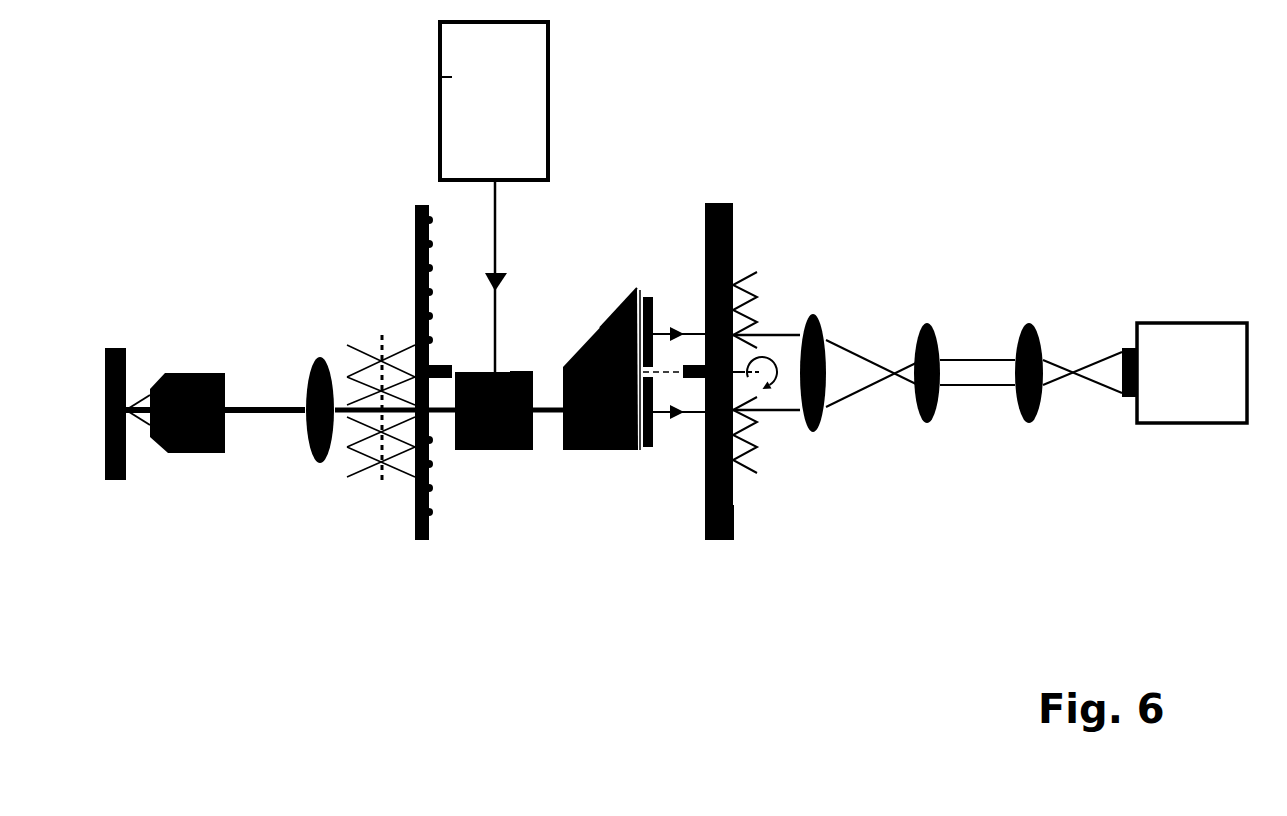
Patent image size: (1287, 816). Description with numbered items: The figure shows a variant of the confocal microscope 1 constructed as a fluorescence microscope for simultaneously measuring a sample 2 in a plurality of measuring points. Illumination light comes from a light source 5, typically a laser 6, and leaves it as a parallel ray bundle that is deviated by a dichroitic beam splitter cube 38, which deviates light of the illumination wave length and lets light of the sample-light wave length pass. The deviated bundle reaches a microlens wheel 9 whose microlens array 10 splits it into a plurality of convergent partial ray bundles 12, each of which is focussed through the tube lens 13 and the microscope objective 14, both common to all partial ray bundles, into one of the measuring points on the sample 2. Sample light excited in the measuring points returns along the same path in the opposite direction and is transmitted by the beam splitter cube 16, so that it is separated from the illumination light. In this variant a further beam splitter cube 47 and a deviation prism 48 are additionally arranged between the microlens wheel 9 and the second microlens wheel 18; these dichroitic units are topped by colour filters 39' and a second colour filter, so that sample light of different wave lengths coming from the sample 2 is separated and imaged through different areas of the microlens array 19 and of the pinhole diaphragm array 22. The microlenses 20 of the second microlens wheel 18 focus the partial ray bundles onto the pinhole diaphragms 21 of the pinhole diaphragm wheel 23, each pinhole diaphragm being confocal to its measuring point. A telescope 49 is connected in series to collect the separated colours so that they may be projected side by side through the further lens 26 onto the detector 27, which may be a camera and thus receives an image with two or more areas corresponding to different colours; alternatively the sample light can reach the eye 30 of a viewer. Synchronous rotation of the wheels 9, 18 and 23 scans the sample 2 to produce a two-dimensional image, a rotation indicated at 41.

The confocal microscope 1 is at (872, 120).
The sample 2 is at (112, 480).
The light source 5 is at (548, 77).
The laser 6 is at (452, 77).
The microlens wheel 9 is at (421, 540).
The microlens array 10 is at (398, 517).
The convergent partial ray bundles 12 is at (405, 477).
The tube lens 13 is at (315, 470).
The microscope objective 14 is at (177, 453).
The beam splitter cube 16 is at (492, 450).
The second microlens wheel 18 is at (708, 534).
The microlens array 19 is at (692, 486).
The microlenses 20 is at (703, 440).
The pinhole diaphragms 21 is at (735, 512).
The pinhole diaphragm array 22 is at (752, 491).
The pinhole diaphragm wheel 23 is at (733, 525).
The further lens 26 is at (1030, 323).
The detector 27 is at (1165, 323).
The eye 30 is at (733, 535).
The dichroitic beam splitter cube 38 is at (517, 372).
The colour filter 39' is at (655, 494).
The rotation direction 41 is at (767, 357).
The further beam splitter cube 47 is at (577, 450).
The deviation prism 48 is at (617, 310).
The telescope 49 is at (937, 441).